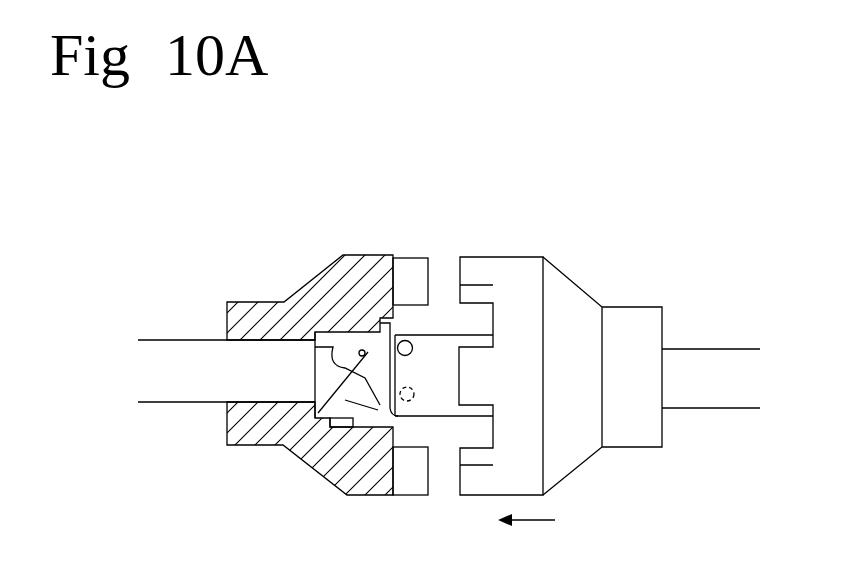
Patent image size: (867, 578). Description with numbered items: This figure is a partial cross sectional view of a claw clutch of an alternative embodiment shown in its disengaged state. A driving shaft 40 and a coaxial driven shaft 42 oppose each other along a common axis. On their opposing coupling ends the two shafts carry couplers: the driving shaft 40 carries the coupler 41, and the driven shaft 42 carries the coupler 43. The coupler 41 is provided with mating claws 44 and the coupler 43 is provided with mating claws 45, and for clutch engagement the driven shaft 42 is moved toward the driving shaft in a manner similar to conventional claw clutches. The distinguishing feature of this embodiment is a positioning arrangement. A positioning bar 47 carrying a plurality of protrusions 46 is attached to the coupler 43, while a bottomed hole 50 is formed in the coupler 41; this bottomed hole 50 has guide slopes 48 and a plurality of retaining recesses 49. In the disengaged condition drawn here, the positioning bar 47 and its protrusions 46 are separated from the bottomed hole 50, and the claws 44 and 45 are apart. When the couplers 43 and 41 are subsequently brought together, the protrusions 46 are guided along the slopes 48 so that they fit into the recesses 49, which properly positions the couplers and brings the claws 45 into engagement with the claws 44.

The driving shaft 40 is at (167, 393).
The coupler 41 is at (300, 283).
The driven shaft 42 is at (700, 358).
The coupler 43 is at (563, 298).
The claws 44 is at (415, 272).
The claws 45 is at (473, 272).
The protrusions 46 is at (405, 340).
The positioning bar 47 is at (440, 357).
The guide slopes 48 is at (362, 350).
The retaining recesses 49 is at (303, 346).
The bottomed hole 50 is at (306, 381).